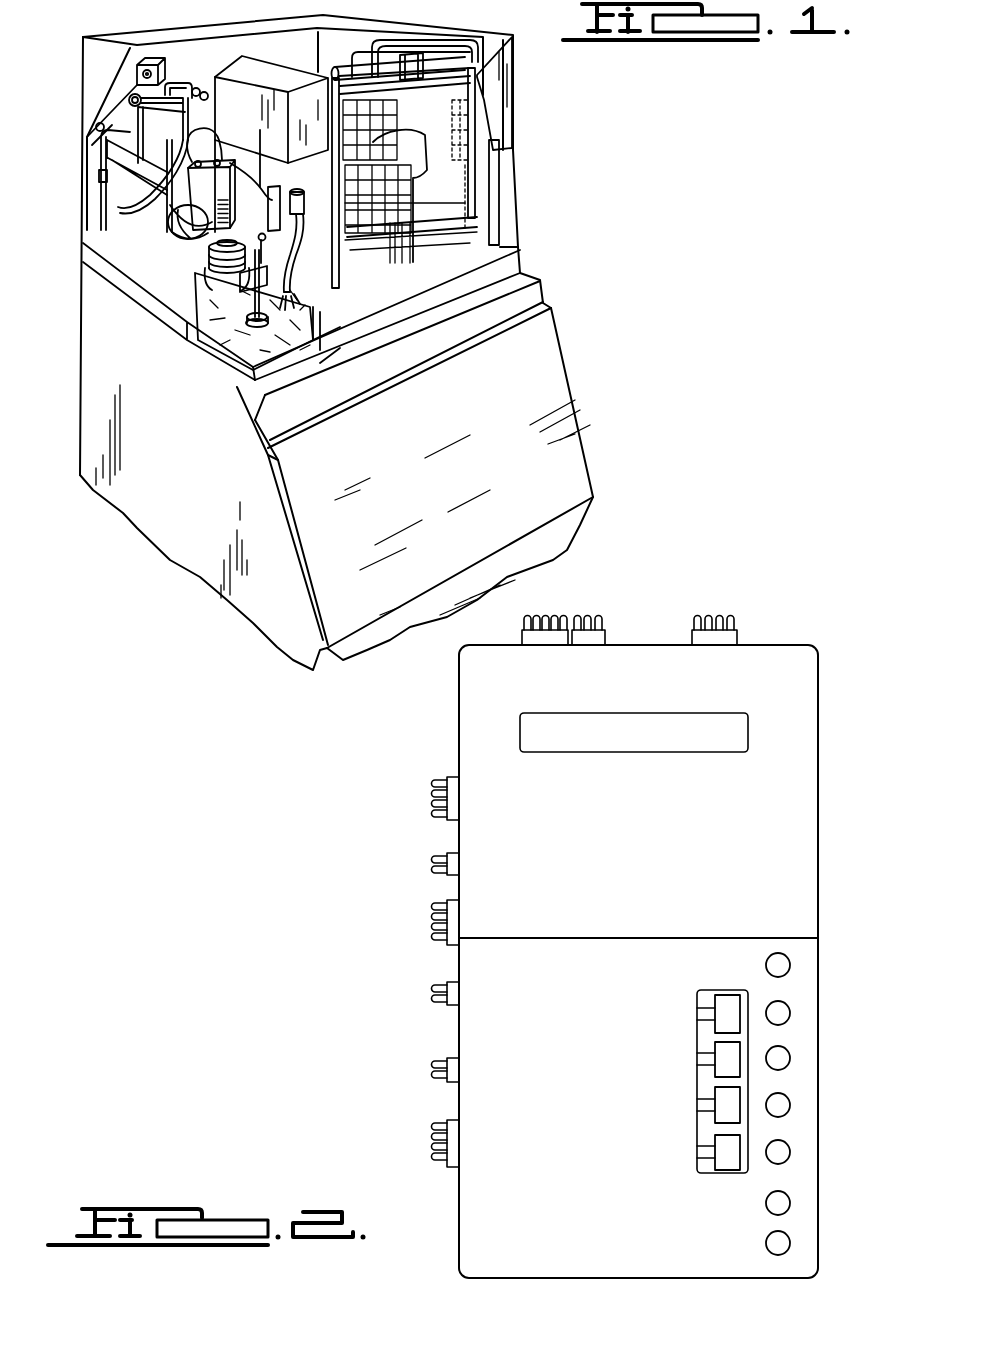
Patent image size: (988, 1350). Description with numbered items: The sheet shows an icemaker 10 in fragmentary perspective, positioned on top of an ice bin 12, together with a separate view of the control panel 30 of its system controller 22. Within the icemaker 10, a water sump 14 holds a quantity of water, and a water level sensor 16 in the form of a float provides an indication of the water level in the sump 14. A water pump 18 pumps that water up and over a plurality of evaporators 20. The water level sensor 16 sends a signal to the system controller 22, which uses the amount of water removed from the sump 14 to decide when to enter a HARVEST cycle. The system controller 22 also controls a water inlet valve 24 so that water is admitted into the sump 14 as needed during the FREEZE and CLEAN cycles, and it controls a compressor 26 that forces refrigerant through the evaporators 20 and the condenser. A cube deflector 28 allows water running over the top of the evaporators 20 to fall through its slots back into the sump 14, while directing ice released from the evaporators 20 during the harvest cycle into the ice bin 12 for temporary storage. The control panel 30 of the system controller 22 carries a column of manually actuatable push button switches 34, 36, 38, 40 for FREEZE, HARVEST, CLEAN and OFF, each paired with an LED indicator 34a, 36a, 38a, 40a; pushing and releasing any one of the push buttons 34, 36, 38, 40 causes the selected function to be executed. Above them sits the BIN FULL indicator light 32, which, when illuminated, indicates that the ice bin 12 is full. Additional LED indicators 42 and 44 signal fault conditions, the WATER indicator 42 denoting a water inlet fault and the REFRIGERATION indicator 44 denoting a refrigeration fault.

In FIG. 1, the icemaker 10 is at (577, 124).
In FIG. 1, the ice bin 12 is at (587, 430).
In FIG. 1, the water sump 14 is at (235, 360).
In FIG. 1, the water level sensor 16 is at (190, 330).
In FIG. 1, the water pump 18 is at (253, 250).
In FIG. 1, the evaporators 20 is at (468, 203).
In FIG. 1, the system controller 22 is at (182, 182).
In FIG. 1, the water inlet valve 24 is at (287, 188).
In FIG. 1, the compressor 26 is at (137, 238).
In FIG. 1, the cube deflector 28 is at (455, 237).
In FIG. 1, the control panel 30 is at (207, 213).
In FIG. 2, the control panel 30 is at (392, 868).
In FIG. 2, the bin full indicator light 32 is at (772, 953).
In FIG. 2, the push button switch 34 is at (733, 1012).
In FIG. 2, the LED indicator 34a is at (790, 1013).
In FIG. 2, the push button switch 36 is at (733, 1058).
In FIG. 2, the LED indicator 36a is at (790, 1058).
In FIG. 2, the push button switch 38 is at (735, 1100).
In FIG. 2, the LED indicator 38a is at (790, 1110).
In FIG. 2, the push button switch 40 is at (735, 1146).
In FIG. 2, the LED indicator 40a is at (790, 1160).
In FIG. 2, the WATER LED indicator 42 is at (790, 1203).
In FIG. 2, the REFRIGERATION LED indicator 44 is at (790, 1241).